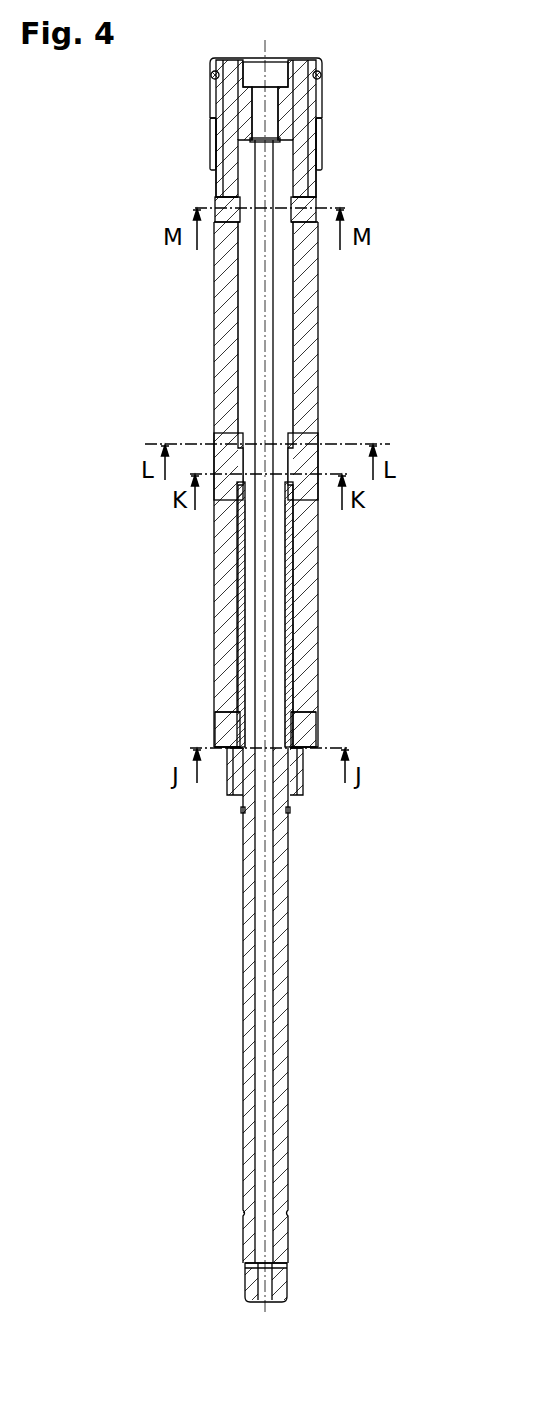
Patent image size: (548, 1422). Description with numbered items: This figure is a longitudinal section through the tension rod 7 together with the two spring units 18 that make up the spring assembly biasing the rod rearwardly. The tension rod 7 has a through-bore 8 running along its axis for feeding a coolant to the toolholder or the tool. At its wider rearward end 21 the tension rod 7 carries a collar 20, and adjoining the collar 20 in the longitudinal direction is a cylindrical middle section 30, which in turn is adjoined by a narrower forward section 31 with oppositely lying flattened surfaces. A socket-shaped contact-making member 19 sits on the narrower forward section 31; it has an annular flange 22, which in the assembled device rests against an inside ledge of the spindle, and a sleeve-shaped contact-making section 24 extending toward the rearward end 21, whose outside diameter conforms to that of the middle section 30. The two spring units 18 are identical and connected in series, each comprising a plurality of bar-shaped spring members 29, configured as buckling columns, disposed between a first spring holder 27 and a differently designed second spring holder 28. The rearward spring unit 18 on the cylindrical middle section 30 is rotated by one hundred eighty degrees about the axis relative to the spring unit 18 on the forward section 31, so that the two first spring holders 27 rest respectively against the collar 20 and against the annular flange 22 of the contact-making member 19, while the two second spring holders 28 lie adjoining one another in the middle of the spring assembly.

The tension rod 7 is at (294, 887).
The through-bore 8 is at (265, 985).
The spring unit 18 is at (320, 329).
The contact-making member 19 is at (210, 741).
The collar 20 is at (318, 192).
The rearward end 21 is at (223, 153).
The annular flange 22 is at (305, 742).
The contact-making section 24 is at (240, 672).
The first spring holder 27 is at (222, 207).
The second spring holder 28 is at (225, 445).
The spring member 29 is at (225, 290).
The cylindrical middle section 30 is at (258, 353).
The forward section 31 is at (248, 614).